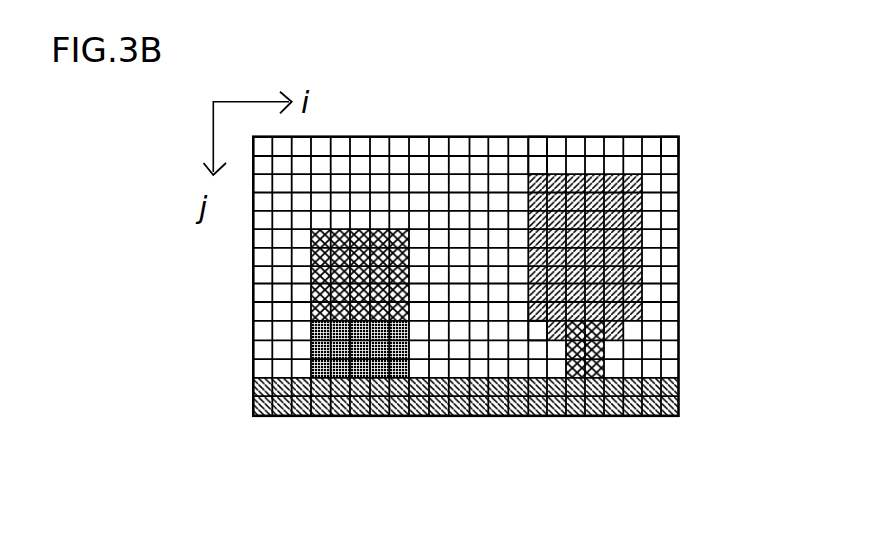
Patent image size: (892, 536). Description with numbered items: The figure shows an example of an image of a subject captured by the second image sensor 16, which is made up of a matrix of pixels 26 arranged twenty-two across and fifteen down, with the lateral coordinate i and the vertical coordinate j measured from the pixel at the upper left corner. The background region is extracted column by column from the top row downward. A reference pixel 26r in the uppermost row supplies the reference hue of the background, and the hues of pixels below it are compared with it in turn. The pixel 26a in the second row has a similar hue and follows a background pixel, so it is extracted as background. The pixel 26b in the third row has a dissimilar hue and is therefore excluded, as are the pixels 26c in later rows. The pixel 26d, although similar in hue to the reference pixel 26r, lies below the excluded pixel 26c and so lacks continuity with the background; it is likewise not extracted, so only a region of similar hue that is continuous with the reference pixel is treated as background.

The second image sensor 16 is at (599, 126).
The pixel 26 is at (670, 146).
The pixel 26a is at (536, 164).
The pixel 26b is at (528, 175).
The pixel 26c is at (537, 318).
The pixel 26d is at (538, 332).
The reference pixel 26r is at (535, 147).